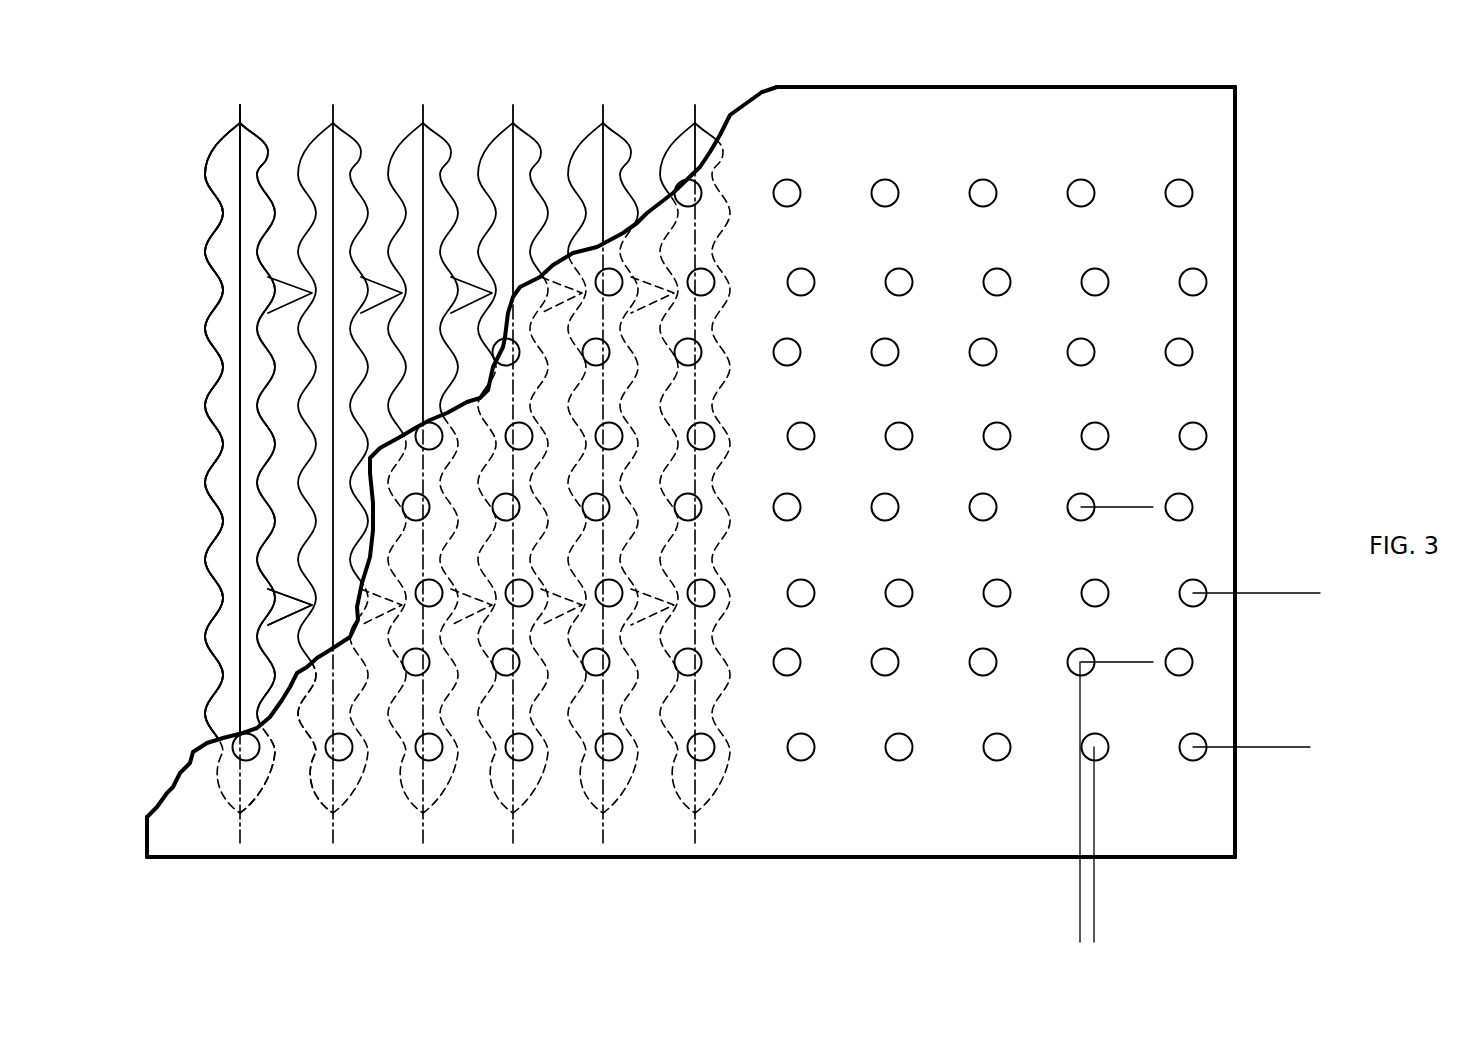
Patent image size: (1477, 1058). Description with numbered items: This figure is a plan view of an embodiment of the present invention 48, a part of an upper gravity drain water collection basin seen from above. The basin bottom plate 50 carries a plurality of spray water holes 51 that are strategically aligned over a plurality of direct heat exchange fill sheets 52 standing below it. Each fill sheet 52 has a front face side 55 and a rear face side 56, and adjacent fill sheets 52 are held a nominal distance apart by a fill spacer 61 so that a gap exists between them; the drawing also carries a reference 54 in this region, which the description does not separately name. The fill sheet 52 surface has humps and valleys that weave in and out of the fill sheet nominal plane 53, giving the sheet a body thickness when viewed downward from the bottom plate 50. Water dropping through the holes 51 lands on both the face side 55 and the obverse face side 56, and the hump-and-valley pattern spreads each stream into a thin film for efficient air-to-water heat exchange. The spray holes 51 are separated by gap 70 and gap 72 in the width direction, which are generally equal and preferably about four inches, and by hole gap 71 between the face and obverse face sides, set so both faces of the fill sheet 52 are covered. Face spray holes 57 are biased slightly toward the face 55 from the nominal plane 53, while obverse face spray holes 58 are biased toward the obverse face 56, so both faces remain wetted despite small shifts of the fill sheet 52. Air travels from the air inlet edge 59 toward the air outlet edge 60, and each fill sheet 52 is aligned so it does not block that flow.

The embodiment of the present invention 48 is at (1276, 152).
The upper gravity drain water collection basin bottom plate 50 is at (1235, 278).
The spray water hole 51 is at (1207, 437).
The direct heat exchange fill sheet 52 is at (204, 566).
The fill sheet nominal plane 53 is at (240, 398).
The gap between wavy strips 54 is at (280, 253).
The front face side 55 is at (210, 663).
The rear face side 56 is at (260, 638).
The face spray hole 57 is at (593, 673).
The obverse face spray hole 58 is at (623, 760).
The air inlet edge 59 is at (862, 857).
The air outlet edge 60 is at (875, 87).
The fill spacer 61 is at (282, 587).
The gap 70 is at (1277, 737).
The hole gap 71 is at (1032, 895).
The gap 72 is at (1143, 517).